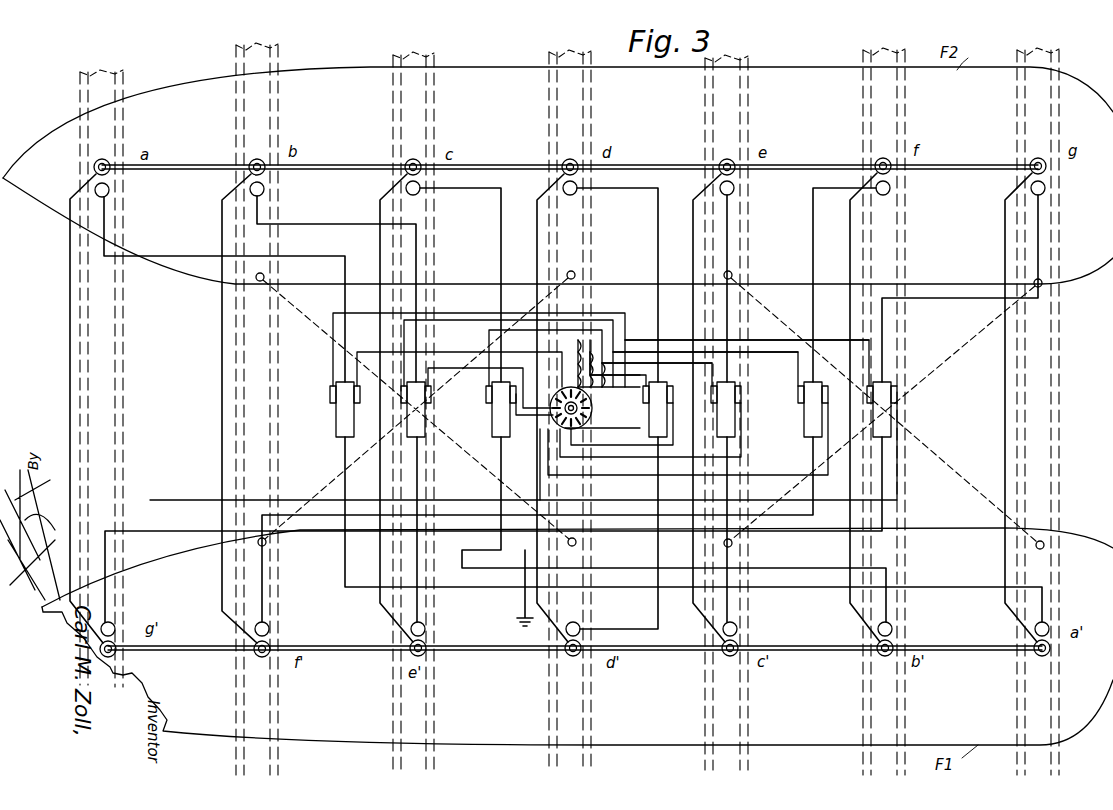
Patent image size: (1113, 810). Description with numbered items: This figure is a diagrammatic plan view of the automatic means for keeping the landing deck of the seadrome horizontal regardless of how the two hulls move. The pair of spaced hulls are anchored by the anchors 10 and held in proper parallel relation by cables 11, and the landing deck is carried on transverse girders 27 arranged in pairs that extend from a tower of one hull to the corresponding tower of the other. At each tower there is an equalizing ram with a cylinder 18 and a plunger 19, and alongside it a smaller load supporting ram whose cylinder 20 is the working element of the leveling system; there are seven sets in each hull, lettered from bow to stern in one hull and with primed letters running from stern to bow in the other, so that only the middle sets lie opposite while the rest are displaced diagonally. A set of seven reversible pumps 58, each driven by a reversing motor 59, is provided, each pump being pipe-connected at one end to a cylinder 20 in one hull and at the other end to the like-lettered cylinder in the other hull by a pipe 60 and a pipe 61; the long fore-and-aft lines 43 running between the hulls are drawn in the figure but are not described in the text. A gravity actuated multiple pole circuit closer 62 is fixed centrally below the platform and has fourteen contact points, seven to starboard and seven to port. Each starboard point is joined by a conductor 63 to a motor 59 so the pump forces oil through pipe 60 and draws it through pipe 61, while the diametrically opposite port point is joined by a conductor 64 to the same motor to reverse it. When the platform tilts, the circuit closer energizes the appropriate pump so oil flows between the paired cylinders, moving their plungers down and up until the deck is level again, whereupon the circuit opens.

The anchor 10 is at (100, 112).
The cable 11 is at (330, 335).
The cylinder 18 is at (404, 164).
The plunger 19 is at (422, 162).
The cylinder 20 is at (418, 195).
The transverse girder 27 is at (255, 722).
The main conductors 43 is at (68, 340).
The pump 58 is at (336, 425).
The reversing motor 59 is at (330, 392).
The pipe 60 is at (345, 256).
The pipe 61 is at (345, 566).
The gravity actuated multiple pole circuit closer 62 is at (600, 428).
The conductor 63 is at (685, 330).
The conductor 64 is at (741, 460).